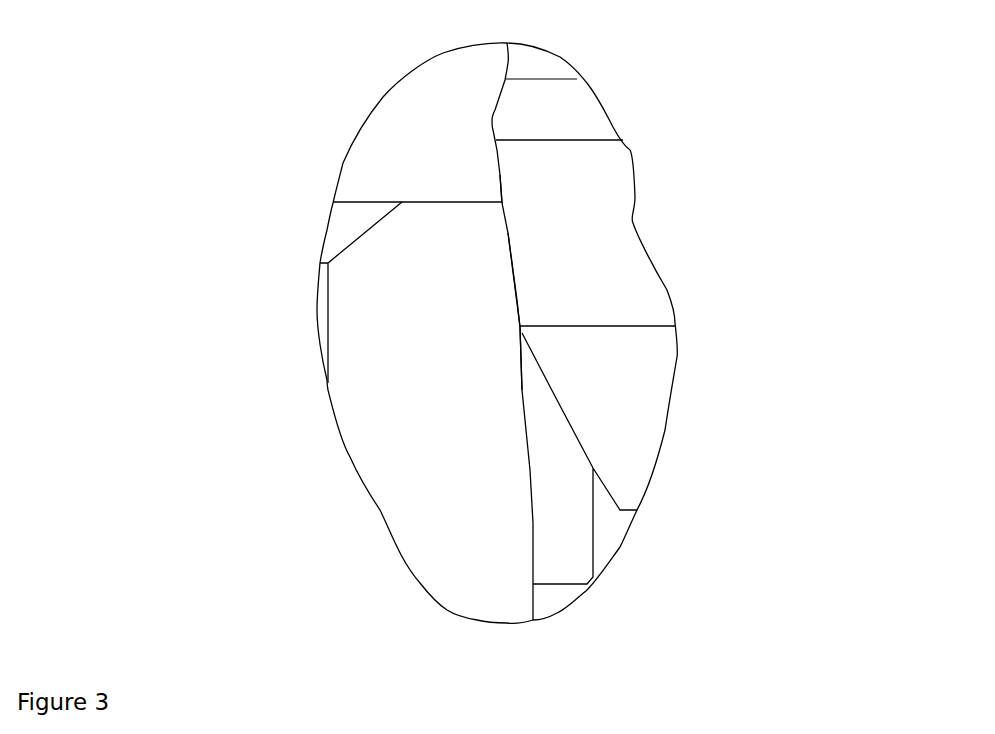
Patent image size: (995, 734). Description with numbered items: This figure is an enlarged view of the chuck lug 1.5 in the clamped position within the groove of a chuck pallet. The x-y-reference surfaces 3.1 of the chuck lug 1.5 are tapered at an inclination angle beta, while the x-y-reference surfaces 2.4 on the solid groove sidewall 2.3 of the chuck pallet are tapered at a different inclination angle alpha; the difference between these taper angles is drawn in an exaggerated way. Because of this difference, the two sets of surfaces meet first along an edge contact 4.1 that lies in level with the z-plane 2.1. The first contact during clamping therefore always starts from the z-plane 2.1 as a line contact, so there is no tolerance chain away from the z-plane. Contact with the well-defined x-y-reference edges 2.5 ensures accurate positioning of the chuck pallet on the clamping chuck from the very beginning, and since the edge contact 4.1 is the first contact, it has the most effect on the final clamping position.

The chuck lug 1.5 is at (603, 233).
The z-plane 2.1 is at (364, 190).
The solid groove sidewall 2.3 is at (494, 533).
The x-y-reference surfaces of the chuck pallet 2.4 is at (505, 381).
The x-y-reference edges 2.5 is at (489, 217).
The x-y-reference surfaces of the chuck lug 3.1 is at (529, 294).
The edge contact 4.1 is at (516, 194).